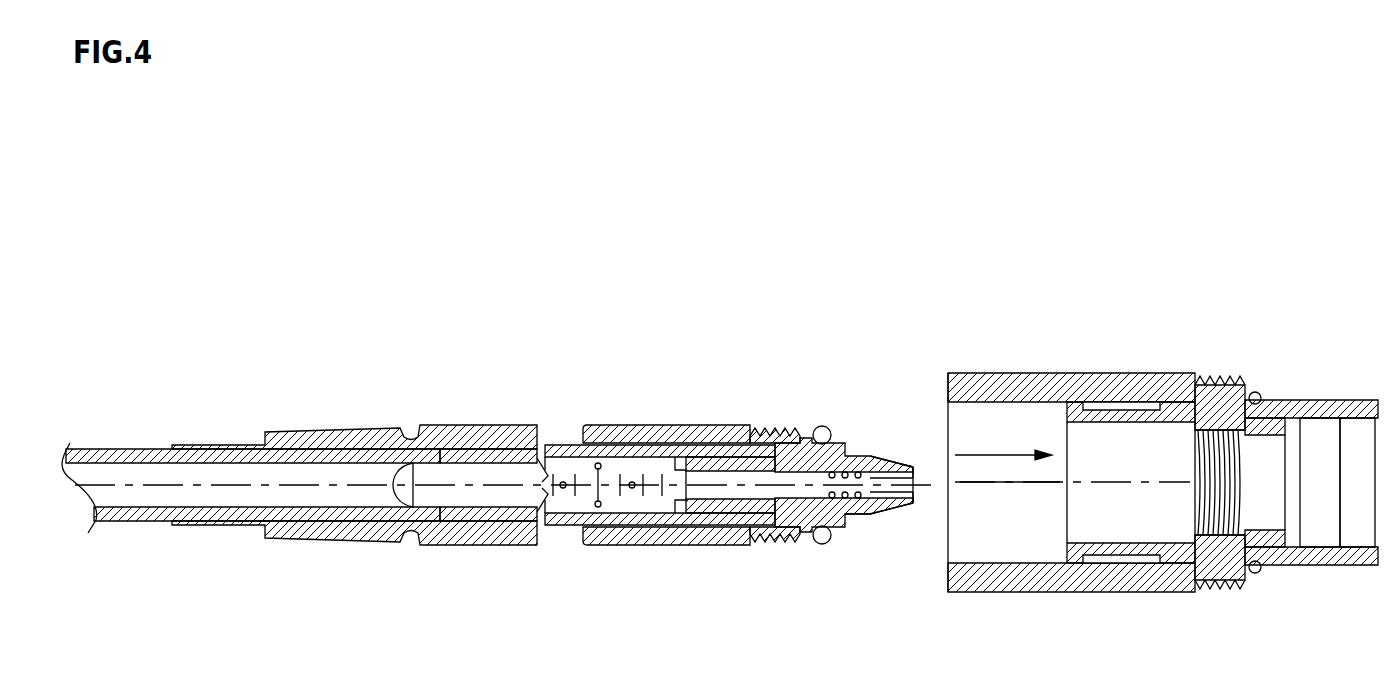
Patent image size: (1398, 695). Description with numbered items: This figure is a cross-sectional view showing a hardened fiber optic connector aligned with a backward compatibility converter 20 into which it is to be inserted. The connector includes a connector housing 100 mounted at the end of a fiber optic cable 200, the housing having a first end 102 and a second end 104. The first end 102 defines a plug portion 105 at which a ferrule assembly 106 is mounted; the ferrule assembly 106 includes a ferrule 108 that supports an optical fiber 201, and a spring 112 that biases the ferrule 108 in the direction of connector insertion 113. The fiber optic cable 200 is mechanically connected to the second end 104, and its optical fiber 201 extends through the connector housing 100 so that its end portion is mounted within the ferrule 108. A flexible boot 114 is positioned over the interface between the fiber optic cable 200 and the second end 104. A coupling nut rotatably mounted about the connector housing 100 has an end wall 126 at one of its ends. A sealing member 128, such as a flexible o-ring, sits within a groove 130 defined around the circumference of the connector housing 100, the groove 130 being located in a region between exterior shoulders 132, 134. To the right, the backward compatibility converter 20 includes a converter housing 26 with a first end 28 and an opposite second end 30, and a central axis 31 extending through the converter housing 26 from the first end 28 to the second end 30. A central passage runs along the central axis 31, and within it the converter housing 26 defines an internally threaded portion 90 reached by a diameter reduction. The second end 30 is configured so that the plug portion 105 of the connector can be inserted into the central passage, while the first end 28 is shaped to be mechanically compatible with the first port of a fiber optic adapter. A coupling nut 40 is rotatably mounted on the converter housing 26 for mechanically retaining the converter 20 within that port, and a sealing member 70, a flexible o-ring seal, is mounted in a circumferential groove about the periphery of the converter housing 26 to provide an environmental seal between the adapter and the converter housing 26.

The fiber optic cable 200 is at (100, 448).
The flexible boot 114 is at (380, 540).
The second end 104 is at (470, 455).
The connector housing 100 is at (553, 440).
The optical fiber 201 is at (592, 483).
The exterior shoulder 132 is at (805, 433).
The end wall 126 is at (808, 527).
The exterior shoulder 134 is at (848, 442).
The sealing member 128 is at (822, 425).
The groove 130 is at (814, 527).
The spring 112 is at (888, 459).
The first end 102 is at (910, 463).
The ferrule 108 is at (918, 466).
The ferrule assembly 106 is at (862, 513).
The plug portion 105 is at (903, 510).
The backward compatibility converter 20 is at (1121, 328).
The coupling nut 40 is at (1015, 373).
The direction of connector insertion 113 is at (971, 453).
The central axis 31 is at (1000, 485).
The second end 30 is at (1063, 415).
The internally threaded portion 90 is at (1195, 455).
The converter housing 26 is at (1297, 398).
The first end 28 is at (1388, 398).
The sealing member 70 is at (1255, 390).